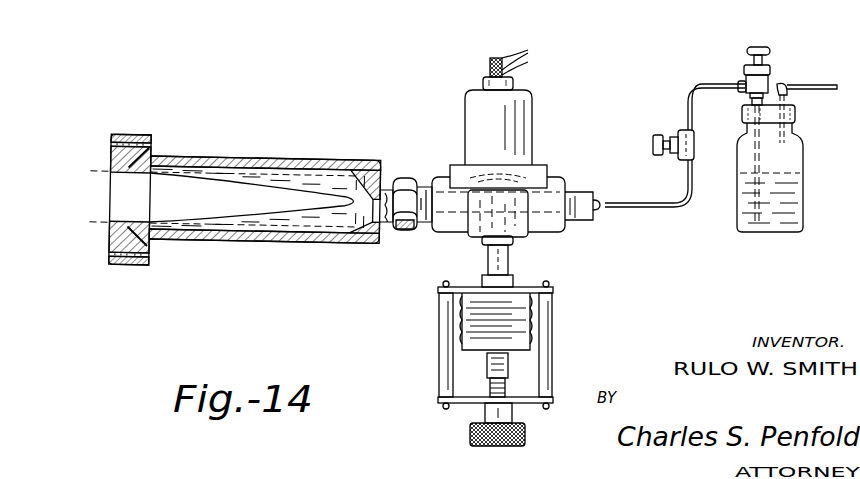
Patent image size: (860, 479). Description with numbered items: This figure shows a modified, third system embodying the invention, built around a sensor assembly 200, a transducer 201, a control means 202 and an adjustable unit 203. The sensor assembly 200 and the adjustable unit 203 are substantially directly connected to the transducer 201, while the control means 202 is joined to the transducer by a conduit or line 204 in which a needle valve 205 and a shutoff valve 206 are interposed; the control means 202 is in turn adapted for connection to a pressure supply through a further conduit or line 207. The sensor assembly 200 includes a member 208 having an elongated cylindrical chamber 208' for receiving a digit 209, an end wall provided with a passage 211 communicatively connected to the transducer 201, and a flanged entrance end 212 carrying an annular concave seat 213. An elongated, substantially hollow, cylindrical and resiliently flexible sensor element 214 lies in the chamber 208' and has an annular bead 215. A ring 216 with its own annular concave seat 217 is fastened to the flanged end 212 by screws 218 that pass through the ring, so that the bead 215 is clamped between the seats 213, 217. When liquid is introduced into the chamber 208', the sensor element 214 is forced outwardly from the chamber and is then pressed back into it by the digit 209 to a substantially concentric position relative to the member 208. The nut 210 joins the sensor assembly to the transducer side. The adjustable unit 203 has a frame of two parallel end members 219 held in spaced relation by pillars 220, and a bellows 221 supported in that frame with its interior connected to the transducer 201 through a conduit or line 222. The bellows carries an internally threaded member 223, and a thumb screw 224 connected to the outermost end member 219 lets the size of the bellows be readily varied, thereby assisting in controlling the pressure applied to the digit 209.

The sensor assembly 200 is at (261, 147).
The transducer 201 is at (538, 110).
The control means 202 is at (789, 69).
The adjustable unit 203 is at (562, 308).
The conduit or line 204 is at (720, 83).
The needle valve 205 is at (766, 46).
The shutoff valve 206 is at (672, 133).
The conduit or line 207 is at (816, 92).
The member 208 is at (266, 146).
The elongated cylindrical chamber 208' is at (265, 220).
The digit 209 is at (98, 222).
The coupling nut 210 is at (393, 177).
The passage 211 is at (386, 237).
The flanged entrance end 212 is at (140, 135).
The annular concave seat 213 is at (150, 245).
The sensor element 214 is at (260, 176).
The annular bead 215 is at (150, 158).
The ring 216 is at (122, 135).
The annular concave seat 217 is at (110, 158).
The screws 218 is at (110, 145).
The end members 219 is at (546, 285).
The pillars 220 is at (440, 334).
The bellows 221 is at (462, 310).
The conduit or line 222 is at (510, 262).
The internally threaded member 223 is at (487, 365).
The thumb screw 224 is at (470, 437).